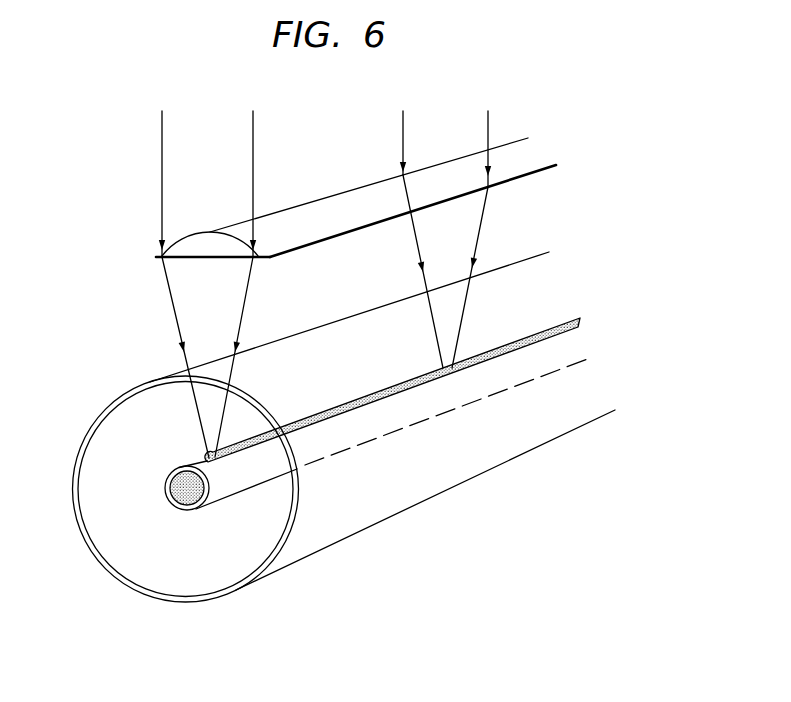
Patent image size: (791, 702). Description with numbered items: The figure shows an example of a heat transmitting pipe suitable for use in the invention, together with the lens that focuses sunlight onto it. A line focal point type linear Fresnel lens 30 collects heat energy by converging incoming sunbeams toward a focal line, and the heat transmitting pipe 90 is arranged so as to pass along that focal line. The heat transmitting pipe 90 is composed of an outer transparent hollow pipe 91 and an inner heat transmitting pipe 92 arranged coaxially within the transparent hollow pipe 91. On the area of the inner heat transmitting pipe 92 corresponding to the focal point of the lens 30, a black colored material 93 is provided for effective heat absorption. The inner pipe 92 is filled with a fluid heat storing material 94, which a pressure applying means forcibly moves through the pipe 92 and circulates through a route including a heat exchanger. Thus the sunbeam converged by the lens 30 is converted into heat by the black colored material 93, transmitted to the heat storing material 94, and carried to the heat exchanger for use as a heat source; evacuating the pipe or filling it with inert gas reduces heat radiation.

The linear Fresnel lens 30 is at (317, 208).
The heat transmitting pipe 90 is at (333, 452).
The transparent hollow pipe 91 is at (110, 425).
The heat transmitting pipe 92 is at (240, 487).
The black colored material 93 is at (257, 437).
The heat storing material 94 is at (178, 503).